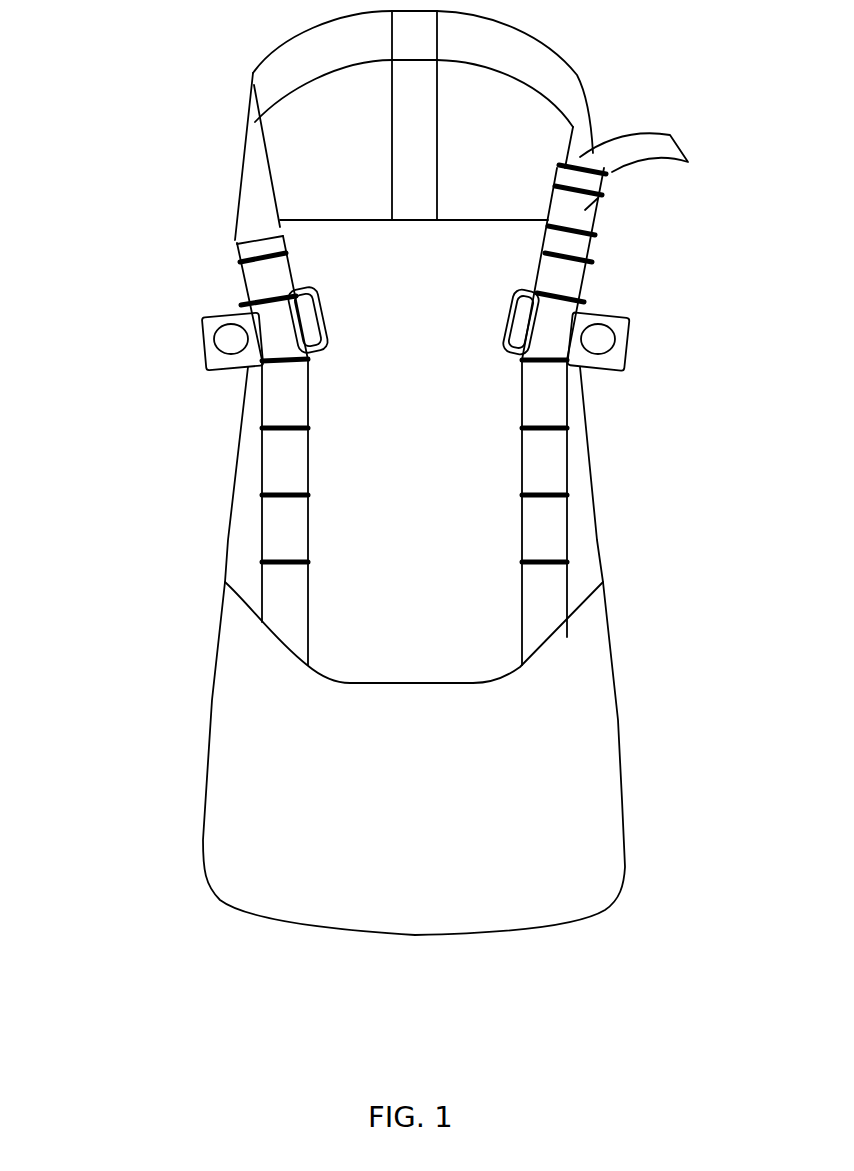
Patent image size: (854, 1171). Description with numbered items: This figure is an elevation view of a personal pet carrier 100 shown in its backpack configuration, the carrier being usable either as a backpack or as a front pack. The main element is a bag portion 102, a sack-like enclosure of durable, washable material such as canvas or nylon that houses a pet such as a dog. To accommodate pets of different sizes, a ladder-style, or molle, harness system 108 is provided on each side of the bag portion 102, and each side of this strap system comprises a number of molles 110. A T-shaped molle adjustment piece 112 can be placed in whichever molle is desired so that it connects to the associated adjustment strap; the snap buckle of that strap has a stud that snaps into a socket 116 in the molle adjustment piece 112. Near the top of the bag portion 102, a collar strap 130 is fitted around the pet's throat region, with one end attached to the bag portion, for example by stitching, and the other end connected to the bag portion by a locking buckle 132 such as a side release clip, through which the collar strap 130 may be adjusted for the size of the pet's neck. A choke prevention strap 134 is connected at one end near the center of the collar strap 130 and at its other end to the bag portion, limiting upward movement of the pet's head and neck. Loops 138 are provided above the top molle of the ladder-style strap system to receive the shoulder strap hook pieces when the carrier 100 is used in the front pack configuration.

The personal pet carrier 100 is at (143, 110).
The bag portion 102 is at (228, 533).
The ladder-style harness system 108 is at (573, 475).
The molles 110 is at (265, 468).
The T-shaped molle adjustment piece 112 is at (414, 250).
The socket 116 is at (217, 363).
The collar strap 130 is at (553, 50).
The locking buckle 132 is at (603, 190).
The choke prevention strap 134 is at (438, 165).
The loops 138 is at (235, 250).